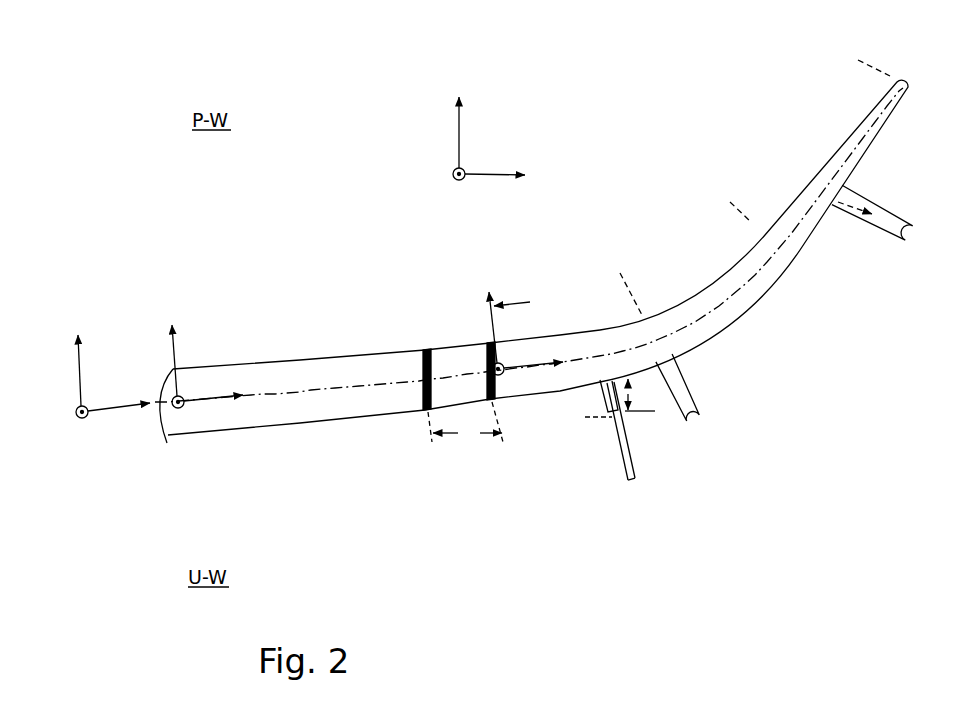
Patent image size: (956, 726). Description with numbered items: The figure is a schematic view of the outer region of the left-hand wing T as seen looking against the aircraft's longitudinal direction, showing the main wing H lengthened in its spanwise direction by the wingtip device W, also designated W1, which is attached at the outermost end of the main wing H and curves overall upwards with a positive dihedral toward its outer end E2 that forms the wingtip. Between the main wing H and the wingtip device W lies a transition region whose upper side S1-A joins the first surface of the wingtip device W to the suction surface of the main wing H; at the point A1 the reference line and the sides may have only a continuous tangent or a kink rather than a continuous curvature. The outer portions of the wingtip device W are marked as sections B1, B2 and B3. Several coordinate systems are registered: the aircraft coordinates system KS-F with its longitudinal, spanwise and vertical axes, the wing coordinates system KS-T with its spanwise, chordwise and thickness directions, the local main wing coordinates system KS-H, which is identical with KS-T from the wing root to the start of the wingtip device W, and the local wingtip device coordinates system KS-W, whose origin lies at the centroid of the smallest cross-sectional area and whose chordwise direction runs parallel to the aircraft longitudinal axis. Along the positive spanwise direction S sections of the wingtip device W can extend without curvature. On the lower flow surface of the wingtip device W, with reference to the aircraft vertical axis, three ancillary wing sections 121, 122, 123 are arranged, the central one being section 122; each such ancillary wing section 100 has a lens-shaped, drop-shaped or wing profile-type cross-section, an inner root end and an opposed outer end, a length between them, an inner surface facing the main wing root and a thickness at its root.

The ancillary wing section 100 is at (668, 513).
The ancillary wing section 121 is at (690, 470).
The central ancillary wing section 122 is at (719, 425).
The ancillary wing section 123 is at (905, 268).
The wingtip device W is at (777, 123).
The main wing H is at (255, 429).
The wing T is at (375, 412).
The spanwise direction S is at (619, 407).
The aircraft coordinates system KS-F is at (425, 138).
The wing coordinates system KS-T is at (88, 306).
The local coordinates system of the main wing KS-H is at (185, 318).
The local coordinates system of the wingtip device KS-W is at (528, 292).
The point A1 is at (425, 349).
The upper side of the transition region S1-A is at (452, 342).
The outer end E2 is at (905, 72).
The wingtip device W1 is at (715, 183).
The outer section of the wingtip device B1 is at (673, 287).
The outer section of the wingtip device B2 is at (760, 213).
The bend position 3 B3 is at (880, 75).